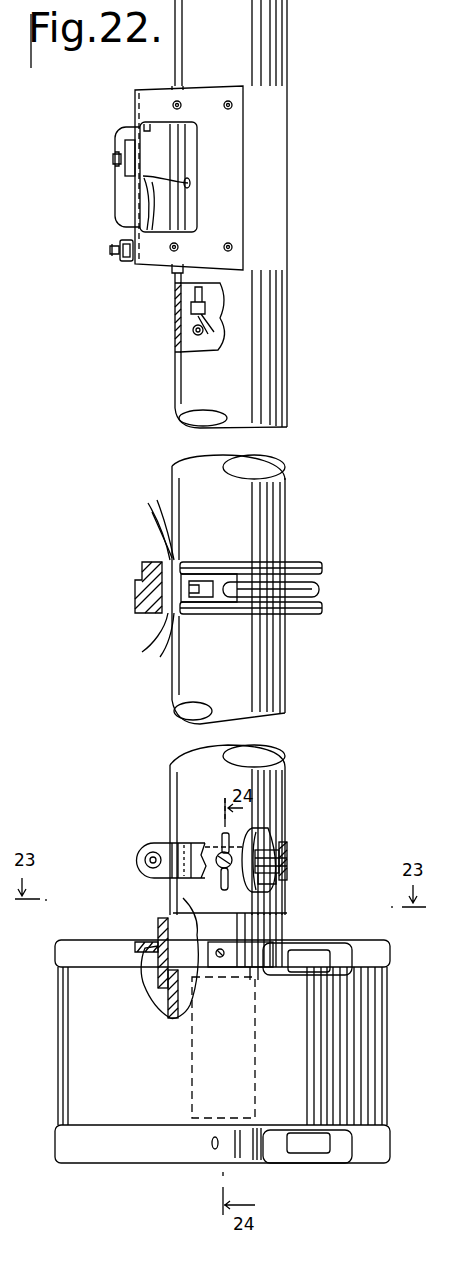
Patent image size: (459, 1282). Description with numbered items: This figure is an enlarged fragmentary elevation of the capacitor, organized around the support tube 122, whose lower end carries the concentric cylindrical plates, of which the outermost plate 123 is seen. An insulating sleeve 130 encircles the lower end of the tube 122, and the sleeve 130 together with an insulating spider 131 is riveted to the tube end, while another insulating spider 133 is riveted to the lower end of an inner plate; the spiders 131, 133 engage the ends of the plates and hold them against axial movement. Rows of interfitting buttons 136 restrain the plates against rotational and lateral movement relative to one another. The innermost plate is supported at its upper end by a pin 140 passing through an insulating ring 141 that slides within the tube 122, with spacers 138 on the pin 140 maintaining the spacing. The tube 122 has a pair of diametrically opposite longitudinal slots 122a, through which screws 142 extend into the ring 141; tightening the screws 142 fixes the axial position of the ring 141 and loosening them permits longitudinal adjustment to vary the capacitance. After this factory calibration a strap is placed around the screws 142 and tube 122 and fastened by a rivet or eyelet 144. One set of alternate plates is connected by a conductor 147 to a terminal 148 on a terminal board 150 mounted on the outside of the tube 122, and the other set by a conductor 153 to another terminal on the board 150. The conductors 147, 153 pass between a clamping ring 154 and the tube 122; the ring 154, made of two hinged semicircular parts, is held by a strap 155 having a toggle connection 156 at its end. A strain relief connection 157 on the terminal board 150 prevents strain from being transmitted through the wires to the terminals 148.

The support tube 122 is at (270, 393).
The longitudinal slots 122a is at (222, 837).
The cylindrical plate 123 is at (370, 1037).
The insulating sleeve 130 is at (160, 932).
The spider 131 is at (335, 945).
The insulating spider 133 is at (330, 1157).
The interfitting buttons 136 is at (458, 504).
The spacers 138 is at (282, 812).
The pin 140 is at (283, 836).
The insulating ring 141 is at (277, 891).
The screws 142 is at (288, 865).
The rivet or eyelet 144 is at (145, 860).
The conductor 147 is at (168, 495).
The terminal 148 is at (114, 158).
The terminal board 150 is at (158, 95).
The conductor 153 is at (148, 522).
The clamping ring 154 is at (136, 611).
The strap 155 is at (318, 589).
The toggle connection 156 is at (218, 566).
The strain relief connection 157 is at (111, 251).